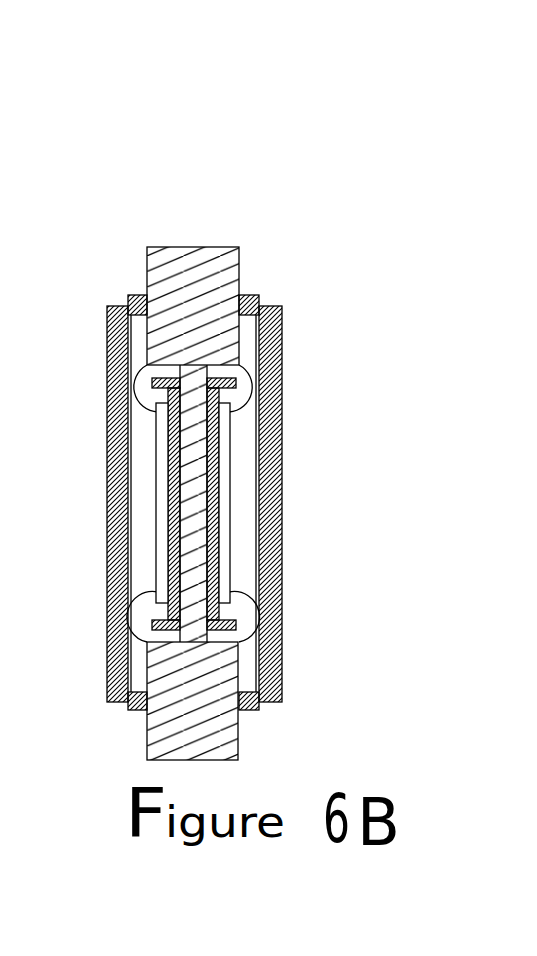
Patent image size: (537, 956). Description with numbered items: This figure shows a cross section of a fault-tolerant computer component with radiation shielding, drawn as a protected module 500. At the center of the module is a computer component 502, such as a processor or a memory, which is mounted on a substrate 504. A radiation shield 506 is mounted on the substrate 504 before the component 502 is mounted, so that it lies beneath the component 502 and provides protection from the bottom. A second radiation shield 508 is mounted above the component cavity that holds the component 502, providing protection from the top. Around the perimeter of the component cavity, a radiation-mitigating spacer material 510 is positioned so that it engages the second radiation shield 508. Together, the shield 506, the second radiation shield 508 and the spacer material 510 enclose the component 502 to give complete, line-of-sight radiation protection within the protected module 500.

The protected module 500 is at (270, 237).
The computer component 502 is at (227, 470).
The substrate 504 is at (217, 283).
The radiation shield 506 is at (215, 520).
The second radiation shield 508 is at (273, 600).
The radiation-mitigating spacer material 510 is at (253, 708).